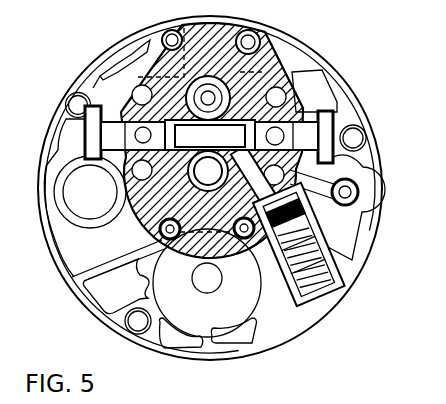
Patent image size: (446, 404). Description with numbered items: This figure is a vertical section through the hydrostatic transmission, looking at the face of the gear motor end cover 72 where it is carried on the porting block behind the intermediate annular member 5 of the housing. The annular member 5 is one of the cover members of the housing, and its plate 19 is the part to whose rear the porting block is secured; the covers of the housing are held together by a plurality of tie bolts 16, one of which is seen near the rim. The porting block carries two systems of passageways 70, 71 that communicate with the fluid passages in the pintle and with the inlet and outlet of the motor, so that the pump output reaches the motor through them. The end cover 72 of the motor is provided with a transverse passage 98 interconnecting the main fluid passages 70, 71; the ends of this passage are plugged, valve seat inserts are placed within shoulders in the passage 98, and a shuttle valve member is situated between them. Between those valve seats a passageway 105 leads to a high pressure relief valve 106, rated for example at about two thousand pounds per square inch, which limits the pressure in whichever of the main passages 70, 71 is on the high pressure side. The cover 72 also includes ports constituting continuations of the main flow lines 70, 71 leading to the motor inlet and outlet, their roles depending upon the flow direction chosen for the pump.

The intermediate annular member 5 is at (360, 255).
The tie bolts 16 is at (364, 133).
The plate 19 is at (110, 289).
The passageway 70 is at (284, 137).
The passageway 71 is at (136, 136).
The end cover 72 is at (271, 60).
The transverse passage 98 is at (238, 137).
The passageway 105 is at (258, 170).
The high pressure relief valve 106 is at (310, 234).